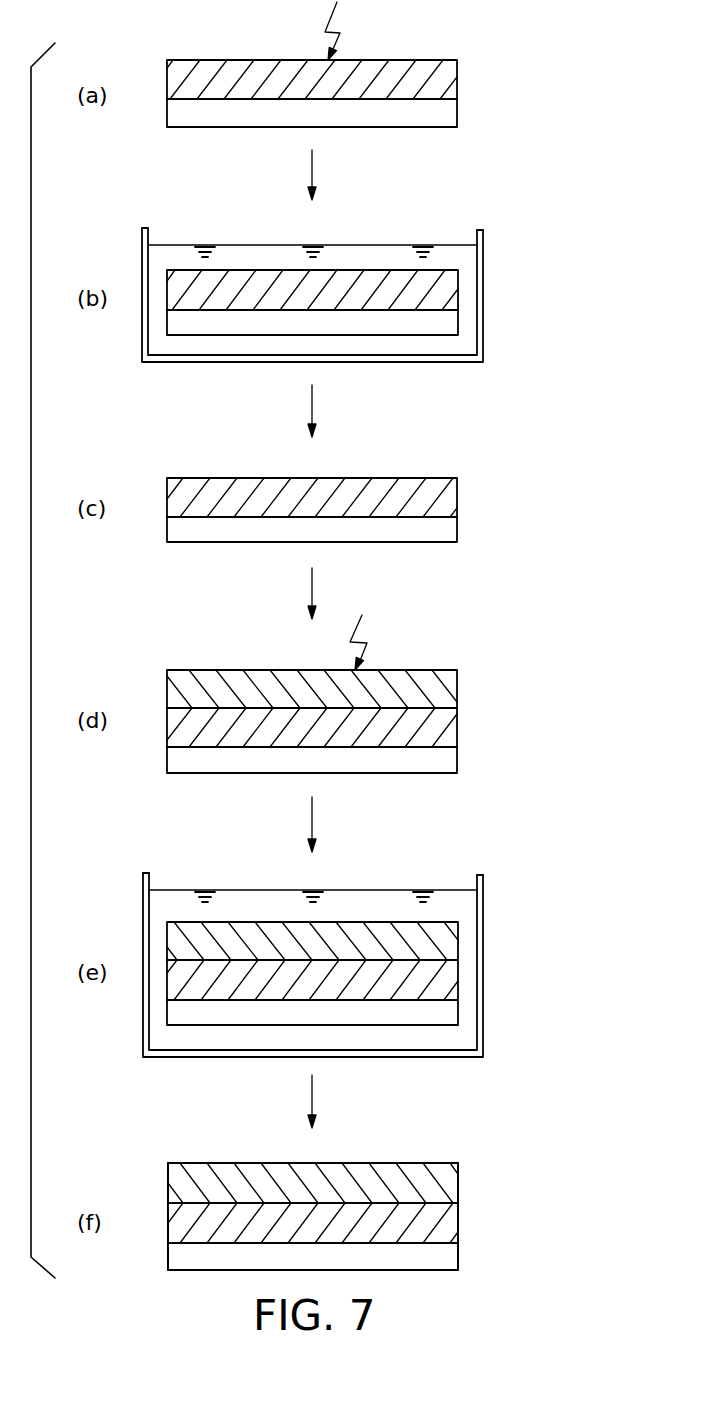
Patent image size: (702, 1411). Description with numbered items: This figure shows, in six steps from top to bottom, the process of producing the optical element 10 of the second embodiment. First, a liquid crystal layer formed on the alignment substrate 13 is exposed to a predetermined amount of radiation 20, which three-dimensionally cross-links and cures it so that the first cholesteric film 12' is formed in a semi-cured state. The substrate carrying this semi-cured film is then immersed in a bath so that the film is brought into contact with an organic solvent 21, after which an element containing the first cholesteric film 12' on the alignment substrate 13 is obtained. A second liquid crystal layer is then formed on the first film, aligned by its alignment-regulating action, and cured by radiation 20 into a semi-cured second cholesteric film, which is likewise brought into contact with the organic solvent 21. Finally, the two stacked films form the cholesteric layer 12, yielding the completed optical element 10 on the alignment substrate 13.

The optical element 10 is at (537, 1143).
The cholesteric layer 12 is at (381, 1203).
The first cholesteric film 12' is at (363, 651).
The alignment substrate 13 is at (452, 117).
The radiation 20 is at (337, 13).
The organic solvent 21 is at (460, 252).